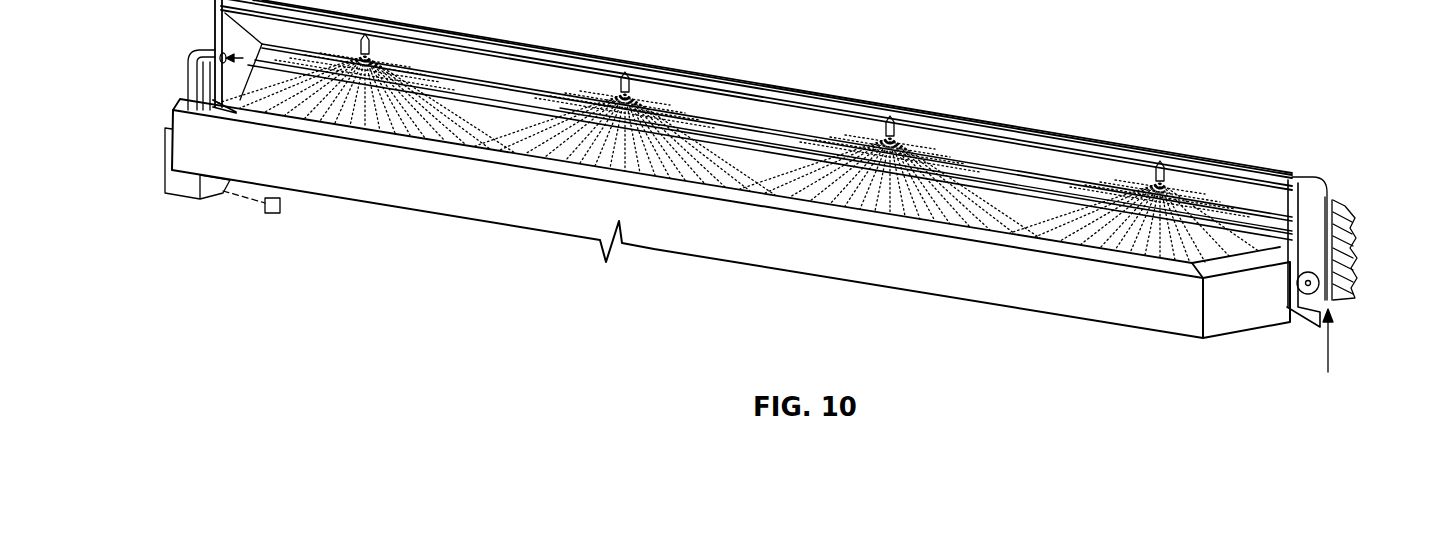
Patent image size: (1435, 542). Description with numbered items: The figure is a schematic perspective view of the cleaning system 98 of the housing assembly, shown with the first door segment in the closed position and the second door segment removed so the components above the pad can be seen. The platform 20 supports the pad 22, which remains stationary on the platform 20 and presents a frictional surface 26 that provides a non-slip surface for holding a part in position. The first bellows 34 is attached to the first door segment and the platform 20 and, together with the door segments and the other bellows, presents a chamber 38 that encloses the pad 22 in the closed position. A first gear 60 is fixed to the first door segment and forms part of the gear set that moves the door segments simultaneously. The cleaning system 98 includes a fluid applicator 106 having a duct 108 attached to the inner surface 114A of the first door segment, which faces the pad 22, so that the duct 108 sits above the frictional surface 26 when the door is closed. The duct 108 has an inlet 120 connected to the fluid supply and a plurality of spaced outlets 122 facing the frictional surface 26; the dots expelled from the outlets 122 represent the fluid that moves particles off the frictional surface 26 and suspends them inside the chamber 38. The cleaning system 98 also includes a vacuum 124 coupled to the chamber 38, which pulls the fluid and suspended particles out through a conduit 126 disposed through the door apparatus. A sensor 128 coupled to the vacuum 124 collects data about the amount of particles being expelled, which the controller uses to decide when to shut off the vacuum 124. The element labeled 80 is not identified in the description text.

The platform 20 is at (1080, 285).
The pad 22 is at (990, 222).
The frictional surface 26 is at (760, 178).
The first bellows 34 is at (1013, 182).
The chamber 38 is at (205, 17).
The first gear 60 is at (1297, 320).
The top edge 80 is at (527, 43).
The cleaning system 98 is at (770, 152).
The fluid applicator 106 is at (1088, 152).
The duct 108 is at (970, 128).
The inner surface 114A is at (828, 127).
The inlet 120 is at (1352, 297).
The outlets 122 is at (633, 88).
The vacuum 124 is at (185, 200).
The conduit 126 is at (188, 60).
The sensor 128 is at (272, 215).